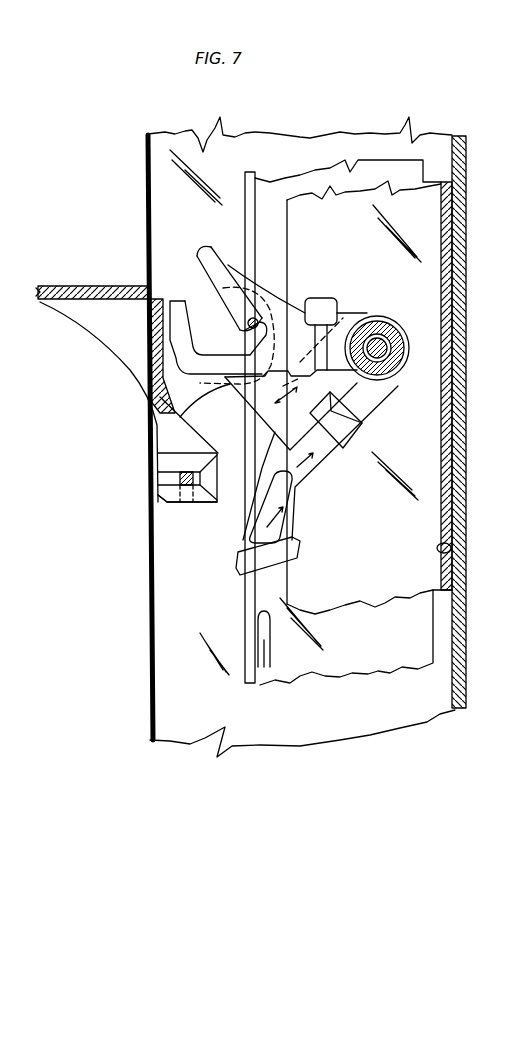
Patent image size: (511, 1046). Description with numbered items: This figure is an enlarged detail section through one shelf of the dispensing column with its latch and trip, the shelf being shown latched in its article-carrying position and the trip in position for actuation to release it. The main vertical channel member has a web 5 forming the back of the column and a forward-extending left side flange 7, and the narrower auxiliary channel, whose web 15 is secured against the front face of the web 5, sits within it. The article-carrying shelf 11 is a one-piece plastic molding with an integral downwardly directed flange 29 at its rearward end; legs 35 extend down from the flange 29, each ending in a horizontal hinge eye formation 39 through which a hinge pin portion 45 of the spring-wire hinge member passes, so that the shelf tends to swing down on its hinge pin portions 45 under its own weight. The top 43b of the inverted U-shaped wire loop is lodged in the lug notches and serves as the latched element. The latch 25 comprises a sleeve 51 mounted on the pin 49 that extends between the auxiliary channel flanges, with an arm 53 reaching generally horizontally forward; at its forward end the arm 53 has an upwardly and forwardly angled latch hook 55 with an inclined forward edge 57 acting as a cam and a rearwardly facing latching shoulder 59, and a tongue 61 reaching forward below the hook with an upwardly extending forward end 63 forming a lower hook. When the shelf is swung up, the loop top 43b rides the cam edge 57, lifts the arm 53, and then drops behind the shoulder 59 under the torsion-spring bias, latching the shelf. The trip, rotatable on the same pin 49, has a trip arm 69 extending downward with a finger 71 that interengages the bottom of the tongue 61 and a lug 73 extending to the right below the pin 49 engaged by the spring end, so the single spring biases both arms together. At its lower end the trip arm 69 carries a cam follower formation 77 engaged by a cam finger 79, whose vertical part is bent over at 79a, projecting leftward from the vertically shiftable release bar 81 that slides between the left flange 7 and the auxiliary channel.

The web 5 is at (467, 693).
The left side flange 7 is at (149, 693).
The article-carrying shelf 11 is at (41, 284).
The web 15 is at (460, 548).
The latch 25 is at (200, 248).
The flange 29 is at (147, 347).
The leg 35 is at (170, 436).
The hinge eye formation 39 is at (160, 502).
The top of loop portion 43b is at (259, 286).
The hinge pin portion 45 is at (180, 478).
The pin 49 is at (372, 338).
The sleeve 51 is at (393, 330).
The arm 53 is at (344, 300).
The latch hook 55 is at (220, 253).
The inclined forward edge 57 is at (200, 292).
The latching shoulder 59 is at (248, 320).
The tongue 61 is at (150, 390).
The upwardly extending forward end 63 is at (150, 322).
The trip arm 69 is at (310, 472).
The finger 71 is at (242, 400).
The lug 73 is at (352, 425).
The cam follower formation 77 is at (238, 570).
The cam finger 79 is at (252, 628).
The bent-over part 79a is at (270, 645).
The release bar 81 is at (368, 674).